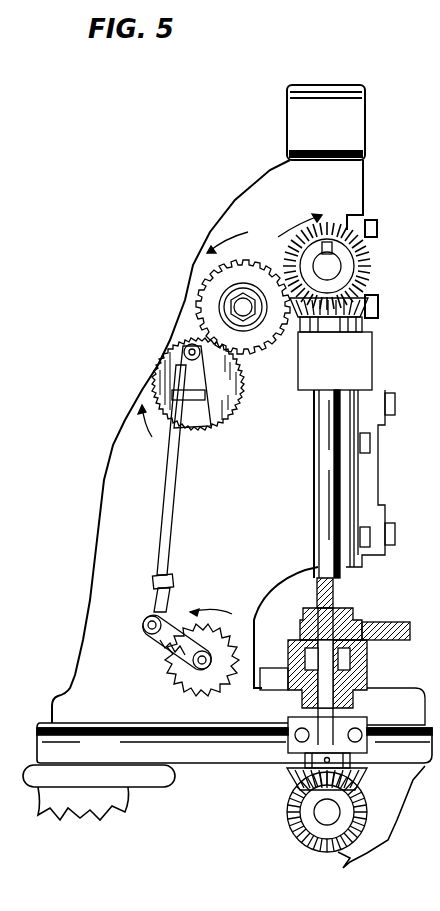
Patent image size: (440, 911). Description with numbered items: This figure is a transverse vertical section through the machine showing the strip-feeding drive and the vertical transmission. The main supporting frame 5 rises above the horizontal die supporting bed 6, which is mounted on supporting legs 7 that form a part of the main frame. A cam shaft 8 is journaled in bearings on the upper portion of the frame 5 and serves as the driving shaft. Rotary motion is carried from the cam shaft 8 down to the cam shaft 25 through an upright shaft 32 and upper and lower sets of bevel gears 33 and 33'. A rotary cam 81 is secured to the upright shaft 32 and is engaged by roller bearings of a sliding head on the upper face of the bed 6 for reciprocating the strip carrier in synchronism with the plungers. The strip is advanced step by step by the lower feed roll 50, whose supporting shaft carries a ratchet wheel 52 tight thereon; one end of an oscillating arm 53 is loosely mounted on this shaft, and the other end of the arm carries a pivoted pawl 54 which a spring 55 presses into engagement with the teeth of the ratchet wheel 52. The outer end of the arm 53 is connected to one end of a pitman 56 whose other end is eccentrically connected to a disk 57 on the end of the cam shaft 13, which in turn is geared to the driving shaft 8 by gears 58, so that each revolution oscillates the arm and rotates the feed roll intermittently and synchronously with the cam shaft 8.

The main supporting frame 5 is at (352, 490).
The die supporting bed 6 is at (398, 694).
The supporting legs 7 is at (92, 808).
The cam shaft 8 is at (336, 266).
The cam shaft 13 is at (200, 386).
The cam shaft 25 is at (327, 814).
The upright shaft 32 is at (314, 518).
The upper set of bevel gears 33 is at (348, 331).
The lower set of bevel gears 33' is at (312, 787).
The lower feed roll 50 is at (200, 668).
The ratchet wheel 52 is at (222, 690).
The oscillating arm 53 is at (176, 640).
The pivoted pawl 54 is at (142, 645).
The spring 55 is at (162, 660).
The pitman 56 is at (170, 522).
The disk 57 is at (238, 410).
The gears 58 is at (290, 250).
The rotary cam 81 is at (388, 624).